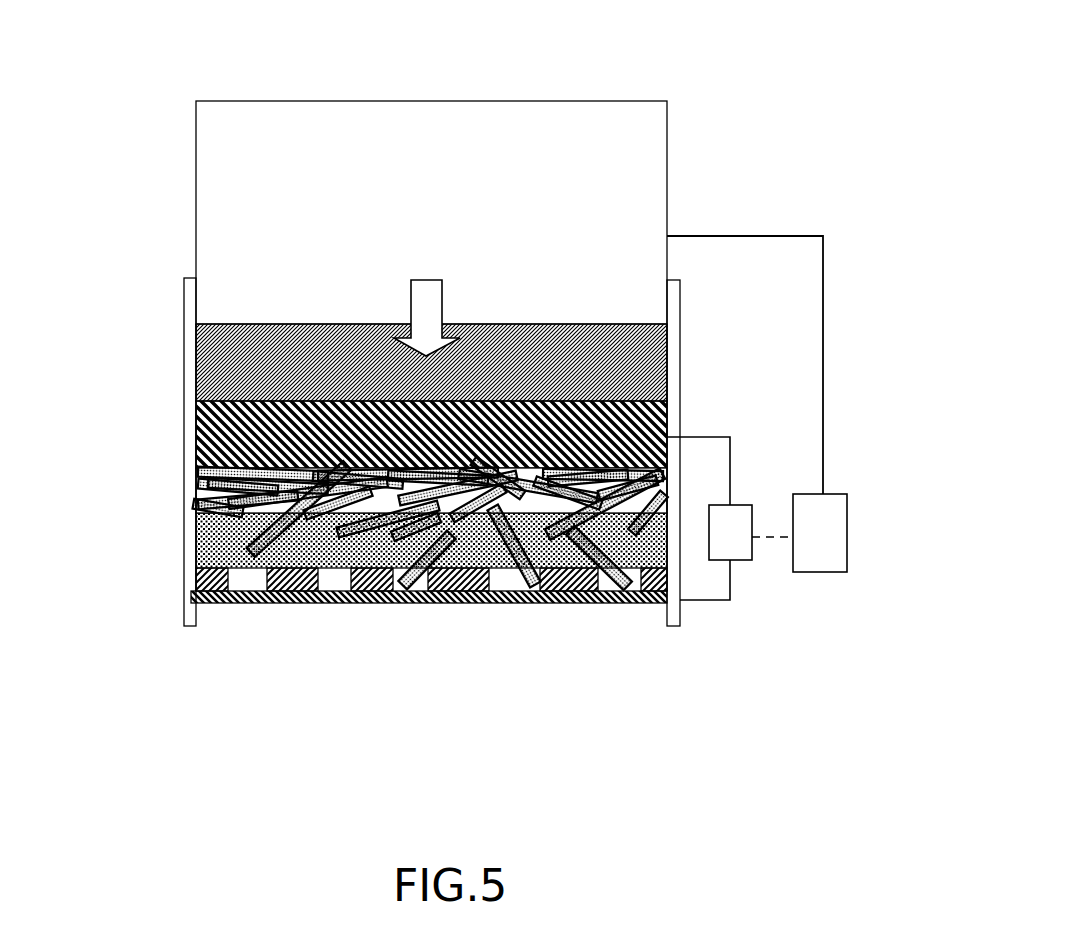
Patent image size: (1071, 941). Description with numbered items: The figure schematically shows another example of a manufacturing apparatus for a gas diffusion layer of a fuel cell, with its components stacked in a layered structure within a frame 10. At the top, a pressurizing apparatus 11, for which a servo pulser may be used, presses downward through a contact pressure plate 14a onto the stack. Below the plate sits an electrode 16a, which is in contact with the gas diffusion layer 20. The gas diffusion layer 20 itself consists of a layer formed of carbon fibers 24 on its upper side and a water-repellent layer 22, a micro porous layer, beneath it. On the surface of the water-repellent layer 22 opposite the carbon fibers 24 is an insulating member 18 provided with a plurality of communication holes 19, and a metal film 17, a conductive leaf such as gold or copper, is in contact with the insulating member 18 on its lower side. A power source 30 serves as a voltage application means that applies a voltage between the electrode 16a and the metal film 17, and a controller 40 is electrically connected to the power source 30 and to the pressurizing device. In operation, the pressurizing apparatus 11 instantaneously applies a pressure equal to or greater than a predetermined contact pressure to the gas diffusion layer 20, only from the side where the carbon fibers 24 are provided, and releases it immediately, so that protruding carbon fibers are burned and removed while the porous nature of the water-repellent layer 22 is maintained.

The pressurizing apparatus 11 is at (637, 92).
The contact pressure plate 14a is at (195, 342).
The electrode 16a is at (195, 416).
The gas diffusion layer 20 is at (354, 523).
The carbon fibers 24 is at (195, 486).
The water-repellent layer 22 is at (195, 516).
The insulating member 18 is at (190, 576).
The communication holes 19 is at (243, 573).
The metal film 17 is at (190, 598).
The frame 10 is at (182, 618).
The power source 30 is at (735, 552).
The controller 40 is at (839, 552).